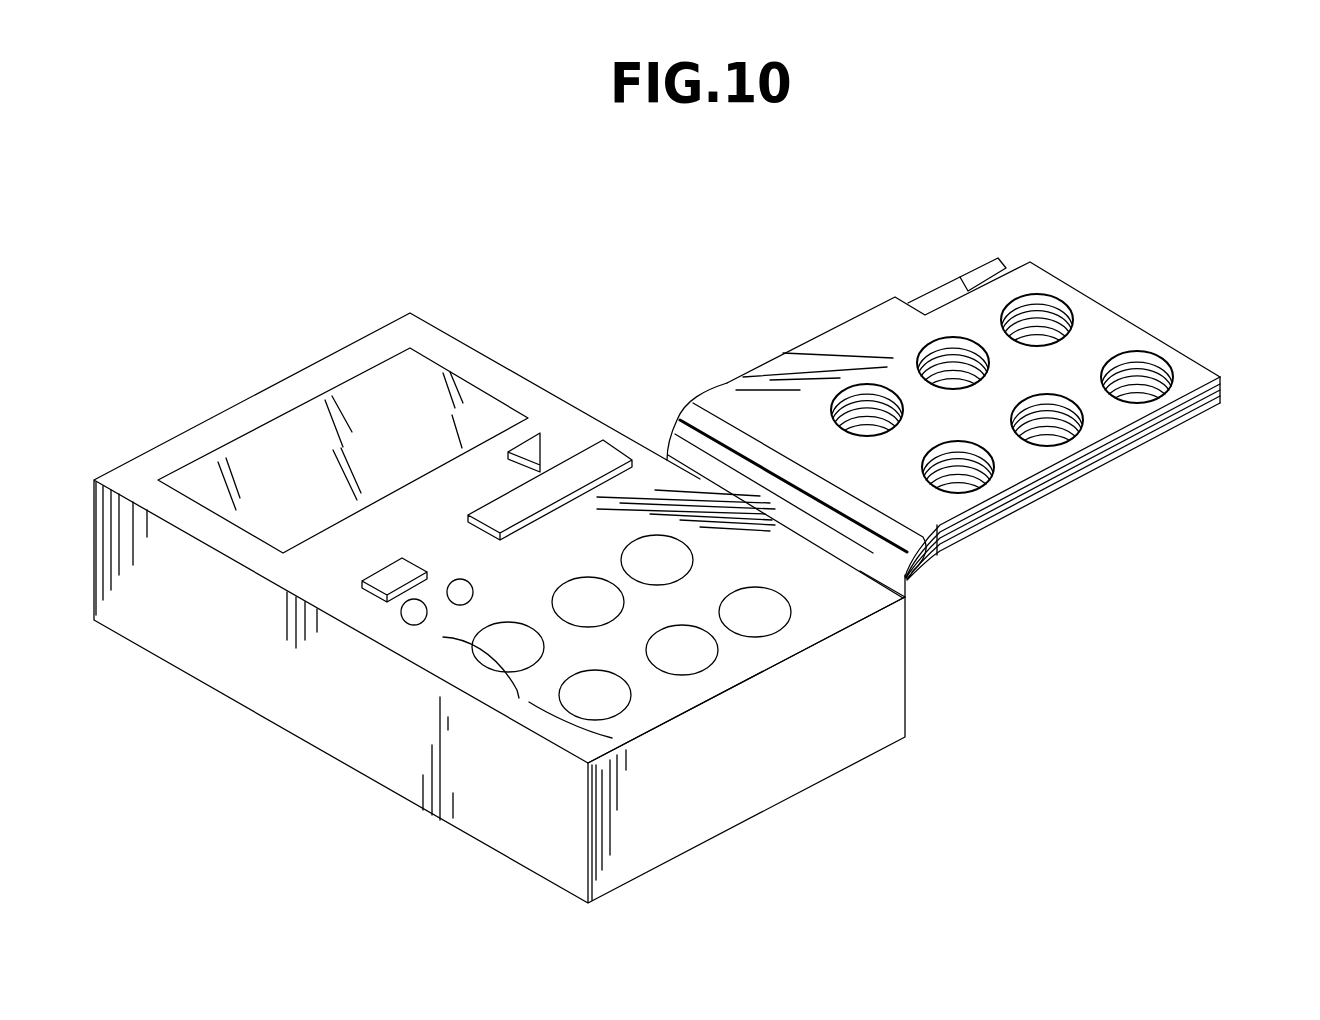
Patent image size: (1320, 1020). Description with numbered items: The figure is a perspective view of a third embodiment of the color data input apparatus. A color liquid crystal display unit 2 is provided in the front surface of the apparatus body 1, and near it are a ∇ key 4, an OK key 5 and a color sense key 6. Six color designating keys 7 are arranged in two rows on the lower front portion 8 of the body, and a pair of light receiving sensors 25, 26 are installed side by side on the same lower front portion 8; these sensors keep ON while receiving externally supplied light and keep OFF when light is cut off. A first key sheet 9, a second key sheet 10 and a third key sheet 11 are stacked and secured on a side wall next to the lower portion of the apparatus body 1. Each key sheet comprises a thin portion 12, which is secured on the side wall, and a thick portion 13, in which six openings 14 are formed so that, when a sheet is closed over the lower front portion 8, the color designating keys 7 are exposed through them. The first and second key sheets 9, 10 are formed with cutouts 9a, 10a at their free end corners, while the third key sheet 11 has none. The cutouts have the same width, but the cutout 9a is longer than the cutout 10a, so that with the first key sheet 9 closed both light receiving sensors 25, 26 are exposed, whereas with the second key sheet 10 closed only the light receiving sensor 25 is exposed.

The apparatus body 1 is at (498, 335).
The color liquid crystal display unit 2 is at (472, 415).
The ∇ key 4 is at (540, 440).
The OK key 5 is at (368, 597).
The color sense key 6 is at (613, 457).
The color designating keys 7 is at (527, 700).
The lower front portion 8 is at (660, 698).
The first key sheet 9 is at (1098, 333).
The cutout 9a is at (1037, 273).
The second key sheet 10 is at (1225, 390).
The cutout 10a is at (965, 280).
The third key sheet 11 is at (1152, 447).
The thin portion 12 is at (910, 572).
The thick portion 13 is at (835, 340).
The openings 14 is at (966, 486).
The light receiving sensor 25 is at (413, 625).
The light receiving sensor 26 is at (466, 581).